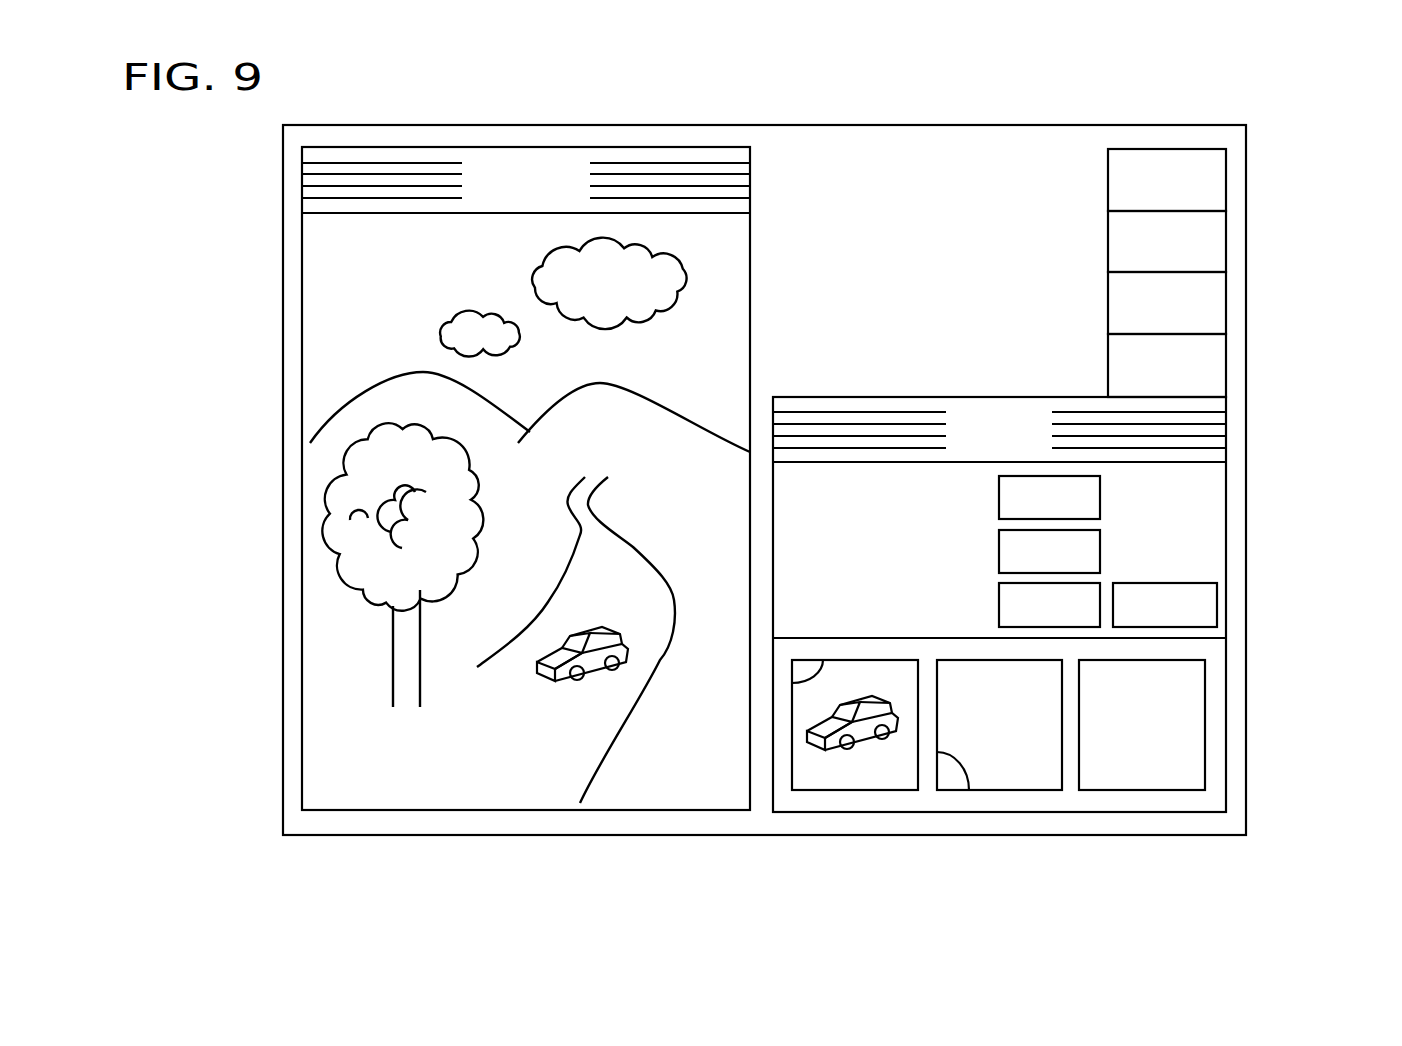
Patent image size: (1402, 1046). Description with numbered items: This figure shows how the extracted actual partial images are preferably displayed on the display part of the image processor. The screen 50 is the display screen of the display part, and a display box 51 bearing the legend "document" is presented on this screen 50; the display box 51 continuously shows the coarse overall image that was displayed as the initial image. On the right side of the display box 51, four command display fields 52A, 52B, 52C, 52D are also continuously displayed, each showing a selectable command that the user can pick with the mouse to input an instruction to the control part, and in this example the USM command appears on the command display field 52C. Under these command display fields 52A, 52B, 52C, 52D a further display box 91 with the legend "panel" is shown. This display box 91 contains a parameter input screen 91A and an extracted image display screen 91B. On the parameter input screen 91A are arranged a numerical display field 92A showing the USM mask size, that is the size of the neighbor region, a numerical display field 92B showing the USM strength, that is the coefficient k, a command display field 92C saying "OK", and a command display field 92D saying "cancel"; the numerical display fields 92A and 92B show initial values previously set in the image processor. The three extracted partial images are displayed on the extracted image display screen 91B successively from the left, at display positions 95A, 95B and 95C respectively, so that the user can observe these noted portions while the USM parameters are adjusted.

The screen 50 is at (958, 125).
The display box 51 is at (300, 250).
The command display field 52A is at (1228, 178).
The command display field 52B is at (1228, 240).
The command display field 52C is at (1228, 303).
The command display field 52D is at (1228, 362).
The display box 91 is at (1228, 424).
The parameter input screen 91A is at (1213, 484).
The extracted image display screen 91B is at (783, 800).
The numerical display field 92A is at (1100, 503).
The numerical display field 92B is at (1100, 550).
The command display field 92C is at (1100, 583).
The command display field 92D is at (1217, 615).
The display position 95A is at (872, 793).
The display position 95B is at (1015, 793).
The display position 95C is at (1165, 793).